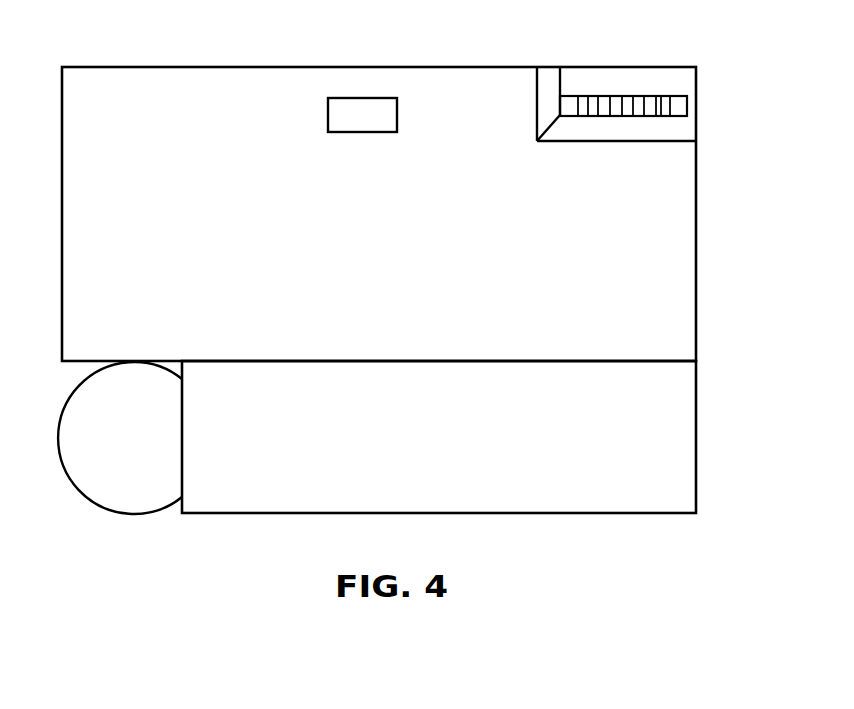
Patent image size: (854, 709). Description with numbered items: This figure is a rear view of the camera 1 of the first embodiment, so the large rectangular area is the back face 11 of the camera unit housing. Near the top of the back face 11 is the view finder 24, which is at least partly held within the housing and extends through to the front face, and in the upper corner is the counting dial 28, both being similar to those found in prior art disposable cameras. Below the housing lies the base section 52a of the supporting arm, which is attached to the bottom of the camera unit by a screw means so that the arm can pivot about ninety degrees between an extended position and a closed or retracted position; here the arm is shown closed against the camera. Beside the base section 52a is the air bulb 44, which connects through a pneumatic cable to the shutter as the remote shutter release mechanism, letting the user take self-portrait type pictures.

The camera 1 is at (742, 265).
The back face 11 is at (388, 257).
The view finder 24 is at (358, 115).
The counting dial 28 is at (681, 97).
The air bulb 44 is at (118, 451).
The base section 52a is at (402, 457).